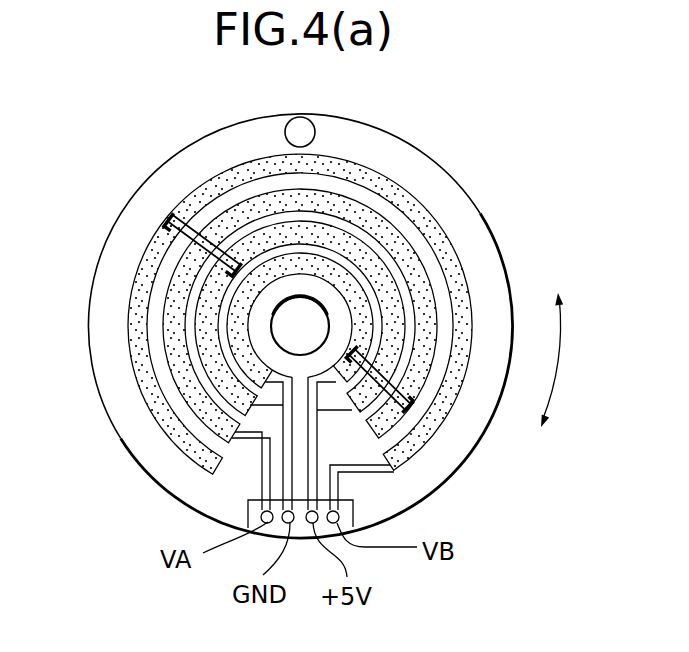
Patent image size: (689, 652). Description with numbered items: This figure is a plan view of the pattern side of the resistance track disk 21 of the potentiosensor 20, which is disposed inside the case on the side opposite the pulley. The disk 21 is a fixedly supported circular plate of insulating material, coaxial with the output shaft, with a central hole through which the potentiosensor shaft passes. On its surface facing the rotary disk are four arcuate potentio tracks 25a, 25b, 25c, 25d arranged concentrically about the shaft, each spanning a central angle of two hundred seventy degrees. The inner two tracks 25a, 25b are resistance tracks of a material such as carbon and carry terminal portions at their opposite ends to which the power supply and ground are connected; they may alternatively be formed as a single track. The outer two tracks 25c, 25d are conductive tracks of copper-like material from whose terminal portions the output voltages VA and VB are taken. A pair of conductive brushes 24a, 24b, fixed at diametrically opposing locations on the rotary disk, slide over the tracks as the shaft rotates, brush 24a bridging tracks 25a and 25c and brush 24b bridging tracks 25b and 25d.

The potentiosensor 20 is at (486, 184).
The resistance track disk 21 is at (453, 427).
The conductive brush 24a is at (407, 412).
The conductive brush 24b is at (183, 232).
The resistance track 25a is at (352, 283).
The resistance track 25b is at (385, 282).
The conductive track 25c is at (430, 278).
The conductive track 25d is at (465, 300).